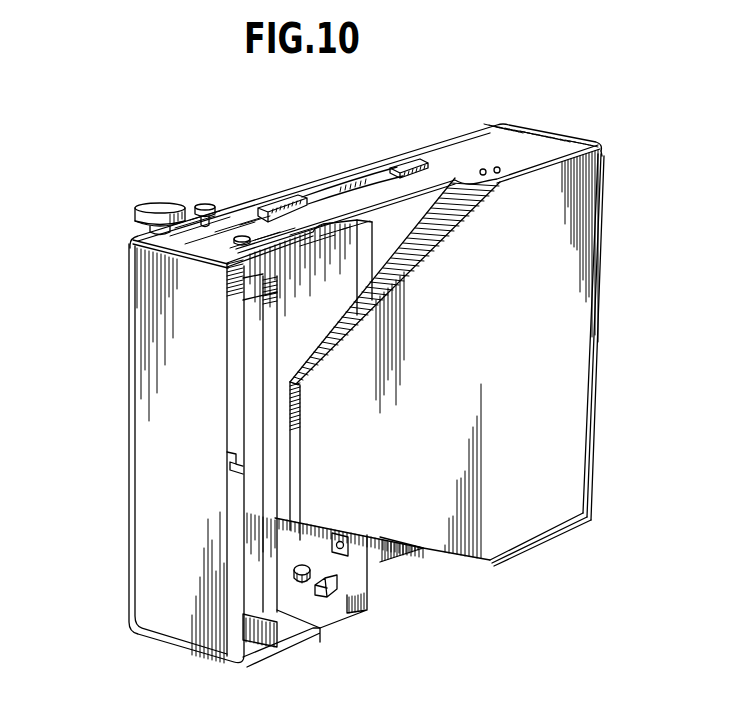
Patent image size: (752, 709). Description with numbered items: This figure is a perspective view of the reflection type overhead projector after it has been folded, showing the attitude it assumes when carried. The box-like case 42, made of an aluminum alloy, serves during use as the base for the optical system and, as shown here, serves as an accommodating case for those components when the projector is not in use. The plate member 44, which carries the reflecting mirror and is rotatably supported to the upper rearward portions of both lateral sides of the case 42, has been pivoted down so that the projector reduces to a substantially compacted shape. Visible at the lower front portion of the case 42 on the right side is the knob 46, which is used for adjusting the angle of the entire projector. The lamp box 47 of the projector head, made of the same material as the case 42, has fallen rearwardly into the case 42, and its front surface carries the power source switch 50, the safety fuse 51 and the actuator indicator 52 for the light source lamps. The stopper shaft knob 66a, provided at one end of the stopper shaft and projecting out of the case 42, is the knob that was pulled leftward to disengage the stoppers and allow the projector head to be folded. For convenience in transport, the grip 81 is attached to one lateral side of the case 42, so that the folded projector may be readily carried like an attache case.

The case 42 is at (143, 527).
The plate member 44 is at (478, 530).
The knob 46 is at (152, 206).
The lamp box 47 is at (300, 310).
The power source switch 50 is at (330, 592).
The safety fuse 51 is at (306, 584).
The actuator indicator 52 is at (338, 556).
The stopper shaft knob 66a is at (208, 203).
The grip 81 is at (344, 178).